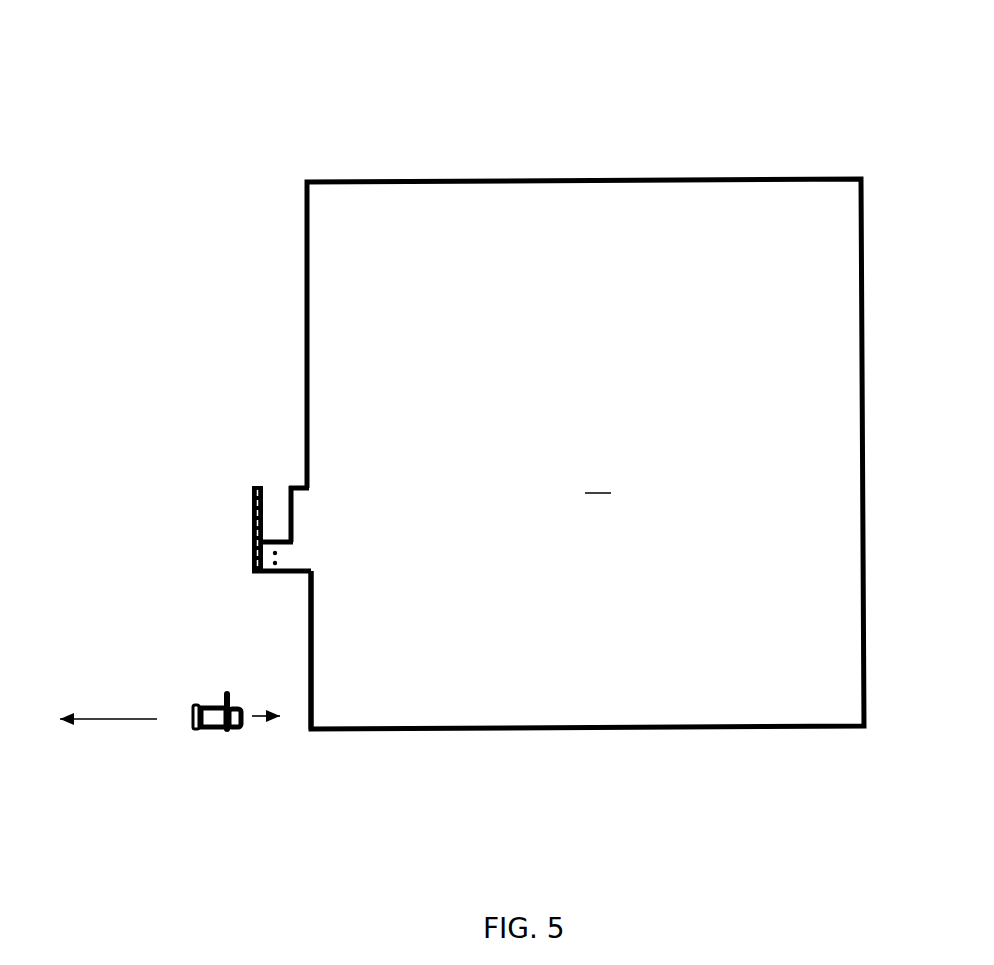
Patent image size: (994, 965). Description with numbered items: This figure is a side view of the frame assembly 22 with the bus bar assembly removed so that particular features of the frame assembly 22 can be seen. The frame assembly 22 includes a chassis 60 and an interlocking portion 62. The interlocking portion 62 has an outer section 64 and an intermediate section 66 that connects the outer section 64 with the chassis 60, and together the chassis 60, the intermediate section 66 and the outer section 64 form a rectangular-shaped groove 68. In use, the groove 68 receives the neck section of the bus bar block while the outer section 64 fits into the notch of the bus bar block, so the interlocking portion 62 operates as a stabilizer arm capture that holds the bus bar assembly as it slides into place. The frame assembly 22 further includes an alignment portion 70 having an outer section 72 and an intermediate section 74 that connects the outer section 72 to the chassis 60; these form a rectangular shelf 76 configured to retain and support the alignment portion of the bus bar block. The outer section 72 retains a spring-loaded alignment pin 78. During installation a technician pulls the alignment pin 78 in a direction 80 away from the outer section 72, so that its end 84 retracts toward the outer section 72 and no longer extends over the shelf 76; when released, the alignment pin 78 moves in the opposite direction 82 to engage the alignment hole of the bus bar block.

The frame assembly 22 is at (462, 441).
The chassis 60 is at (585, 454).
The interlocking portion 62 is at (227, 504).
The outer section 64 is at (253, 550).
The intermediate section 66 is at (282, 572).
The rectangular-shaped groove 68 is at (276, 472).
The alignment portion 70 is at (191, 761).
The outer section 72 is at (224, 693).
The intermediate section 74 is at (281, 734).
The rectangular shelf 76 is at (294, 680).
The spring-loaded alignment pin 78 is at (199, 730).
The direction 80 is at (107, 718).
The direction 82 is at (268, 713).
The end of the alignment pin 84 is at (243, 733).